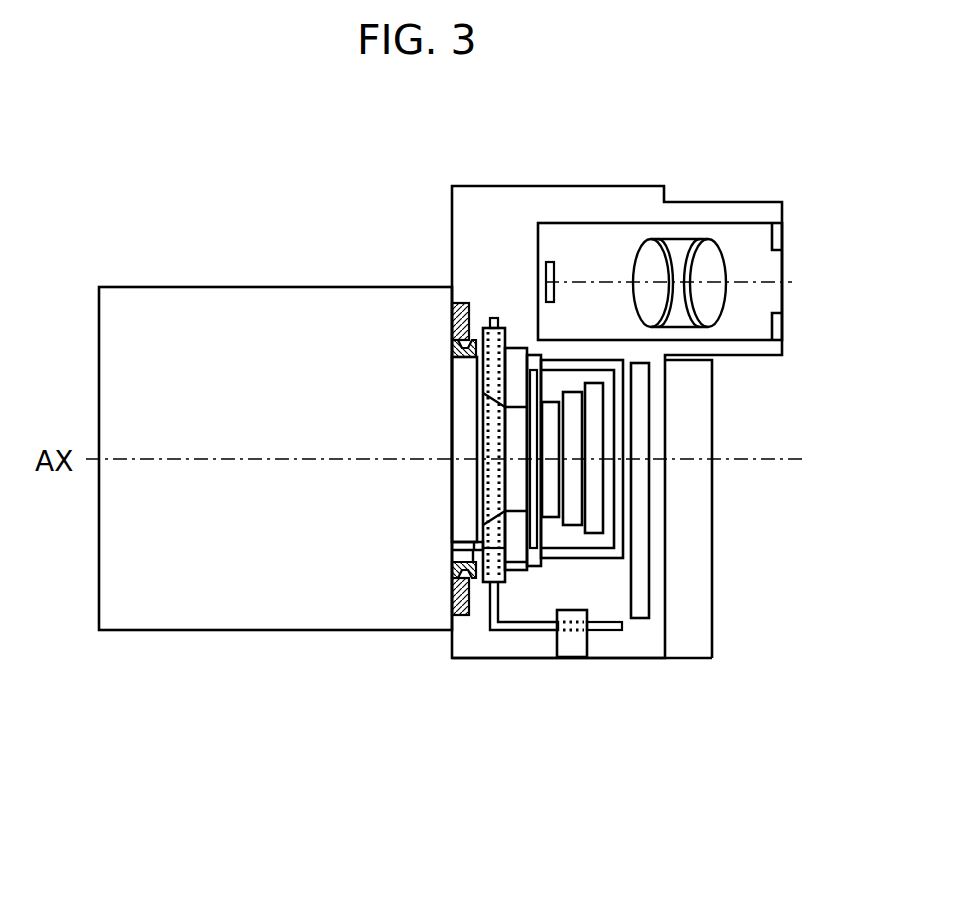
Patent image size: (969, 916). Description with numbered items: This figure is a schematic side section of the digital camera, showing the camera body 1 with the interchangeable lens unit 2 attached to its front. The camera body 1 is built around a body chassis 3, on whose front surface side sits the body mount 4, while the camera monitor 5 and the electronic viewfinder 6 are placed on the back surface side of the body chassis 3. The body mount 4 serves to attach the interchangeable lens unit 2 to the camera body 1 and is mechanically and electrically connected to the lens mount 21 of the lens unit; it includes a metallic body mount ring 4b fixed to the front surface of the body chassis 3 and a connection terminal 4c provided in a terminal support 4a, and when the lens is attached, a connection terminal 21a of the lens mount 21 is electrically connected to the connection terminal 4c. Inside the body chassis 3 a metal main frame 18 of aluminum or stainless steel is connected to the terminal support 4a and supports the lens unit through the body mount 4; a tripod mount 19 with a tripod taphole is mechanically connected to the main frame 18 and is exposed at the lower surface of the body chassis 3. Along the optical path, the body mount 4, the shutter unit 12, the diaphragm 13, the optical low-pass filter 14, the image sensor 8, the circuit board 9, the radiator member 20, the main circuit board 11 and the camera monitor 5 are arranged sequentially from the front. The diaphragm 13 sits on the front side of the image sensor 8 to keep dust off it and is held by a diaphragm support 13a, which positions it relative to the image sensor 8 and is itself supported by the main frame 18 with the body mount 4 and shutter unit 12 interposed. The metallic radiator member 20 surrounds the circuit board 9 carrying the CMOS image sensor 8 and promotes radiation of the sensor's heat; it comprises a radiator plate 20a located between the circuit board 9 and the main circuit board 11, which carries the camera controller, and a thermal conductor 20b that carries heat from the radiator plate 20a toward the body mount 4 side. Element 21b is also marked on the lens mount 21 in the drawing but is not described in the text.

The camera body 1 is at (564, 153).
The interchangeable lens unit 2 is at (191, 283).
The body chassis 3 is at (495, 660).
The body mount 4 is at (460, 298).
The terminal support 4a is at (484, 574).
The body mount ring 4b is at (452, 307).
The connection terminal 4c is at (450, 643).
The camera monitor 5 is at (693, 405).
The electronic viewfinder 6 is at (762, 271).
The image sensor 8 is at (571, 495).
The circuit board 9 is at (594, 477).
The main circuit board 11 is at (640, 459).
The shutter unit 12 is at (517, 562).
The diaphragm 13 is at (533, 532).
The diaphragm support 13a is at (533, 553).
The optical low-pass filter 14 is at (547, 508).
The main frame 18 is at (490, 317).
The tripod mount 19 is at (572, 642).
The radiator member 20 is at (582, 355).
The radiator plate 20a is at (617, 370).
The thermal conductor 20b is at (557, 367).
The lens mount 21 is at (458, 513).
The connection terminal 21a is at (458, 548).
The mount upper flange 21b is at (450, 342).